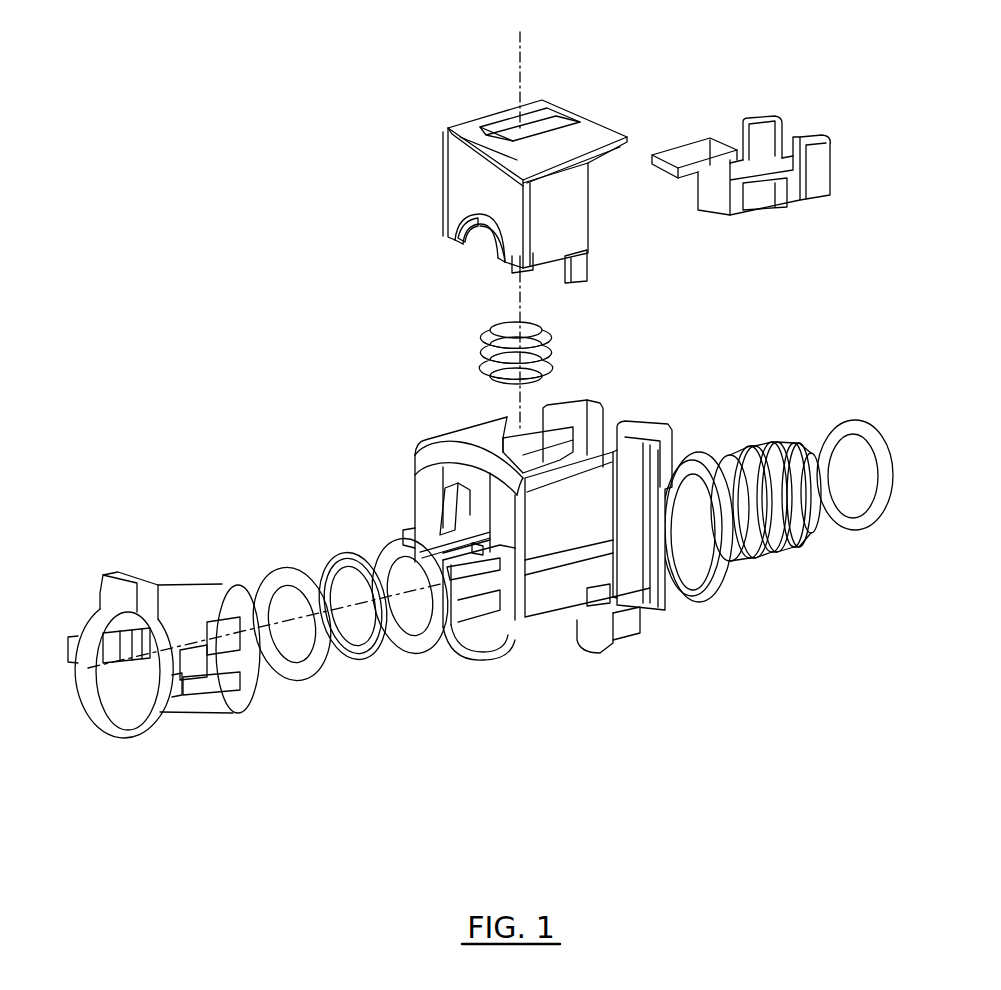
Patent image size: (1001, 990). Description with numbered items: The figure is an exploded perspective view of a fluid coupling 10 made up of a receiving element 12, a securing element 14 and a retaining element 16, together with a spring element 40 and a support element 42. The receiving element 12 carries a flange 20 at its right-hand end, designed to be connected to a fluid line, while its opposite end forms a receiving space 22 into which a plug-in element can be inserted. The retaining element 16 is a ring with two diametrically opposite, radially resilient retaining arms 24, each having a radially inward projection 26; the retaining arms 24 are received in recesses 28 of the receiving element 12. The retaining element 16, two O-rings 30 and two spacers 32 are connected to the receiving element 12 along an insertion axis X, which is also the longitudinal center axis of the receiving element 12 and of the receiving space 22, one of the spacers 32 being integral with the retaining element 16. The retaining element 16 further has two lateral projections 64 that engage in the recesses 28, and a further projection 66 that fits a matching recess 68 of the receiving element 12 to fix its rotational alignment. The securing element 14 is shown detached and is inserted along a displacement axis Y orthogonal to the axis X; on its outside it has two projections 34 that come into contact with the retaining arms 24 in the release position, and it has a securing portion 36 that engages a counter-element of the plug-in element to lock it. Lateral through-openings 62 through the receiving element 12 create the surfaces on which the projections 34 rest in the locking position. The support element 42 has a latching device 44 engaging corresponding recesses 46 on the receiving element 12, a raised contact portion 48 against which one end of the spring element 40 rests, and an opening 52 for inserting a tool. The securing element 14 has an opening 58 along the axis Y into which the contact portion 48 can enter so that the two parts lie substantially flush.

The fluid coupling 10 is at (232, 224).
The receiving element 12 is at (448, 443).
The securing element 14 is at (460, 155).
The retaining element 16 is at (122, 570).
The flange 20 is at (765, 453).
The receiving space 22 is at (478, 612).
The retaining arms 24 is at (234, 665).
The projection 26 is at (203, 657).
The recesses 28 is at (516, 607).
The O-rings 30 is at (420, 640).
The spacers 32 is at (233, 595).
The projections 34 is at (490, 245).
The securing portion 36 is at (463, 232).
The spring element 40 is at (543, 353).
The support element 42 is at (752, 125).
The latching device 44 is at (777, 200).
The recesses 46 is at (570, 453).
The contact portion 48 is at (680, 172).
The opening 52 is at (785, 140).
The opening 58 is at (556, 120).
The through-openings 62 is at (477, 545).
The lateral projections 64 is at (75, 637).
The projection 66 is at (131, 592).
The recess 68 is at (457, 498).
The insertion axis X is at (132, 657).
The displacement axis Y is at (521, 90).